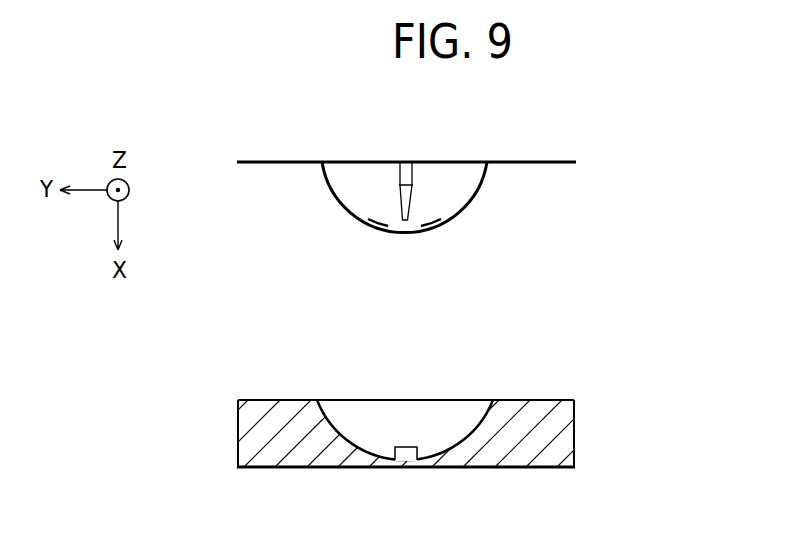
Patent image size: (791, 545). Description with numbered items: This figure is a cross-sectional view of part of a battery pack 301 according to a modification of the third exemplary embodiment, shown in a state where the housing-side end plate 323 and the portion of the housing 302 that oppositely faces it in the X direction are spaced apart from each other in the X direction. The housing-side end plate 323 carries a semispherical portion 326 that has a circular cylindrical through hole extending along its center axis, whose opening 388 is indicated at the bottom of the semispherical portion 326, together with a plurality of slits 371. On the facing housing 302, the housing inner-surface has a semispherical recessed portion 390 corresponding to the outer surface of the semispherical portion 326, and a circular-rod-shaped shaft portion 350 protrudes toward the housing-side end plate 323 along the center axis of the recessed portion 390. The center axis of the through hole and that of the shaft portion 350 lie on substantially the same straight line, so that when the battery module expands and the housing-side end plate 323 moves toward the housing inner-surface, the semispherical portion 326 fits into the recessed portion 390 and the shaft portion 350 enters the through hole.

The battery pack 301 is at (633, 260).
The housing-side end plate 323 is at (277, 161).
The semispherical portion 326 is at (473, 205).
The slits 371 is at (415, 184).
The opening of circular cylindrical through hole 388 is at (393, 236).
The housing 302 is at (402, 401).
The semispherical recessed portion 390 is at (352, 432).
The shaft portion 350 is at (406, 447).